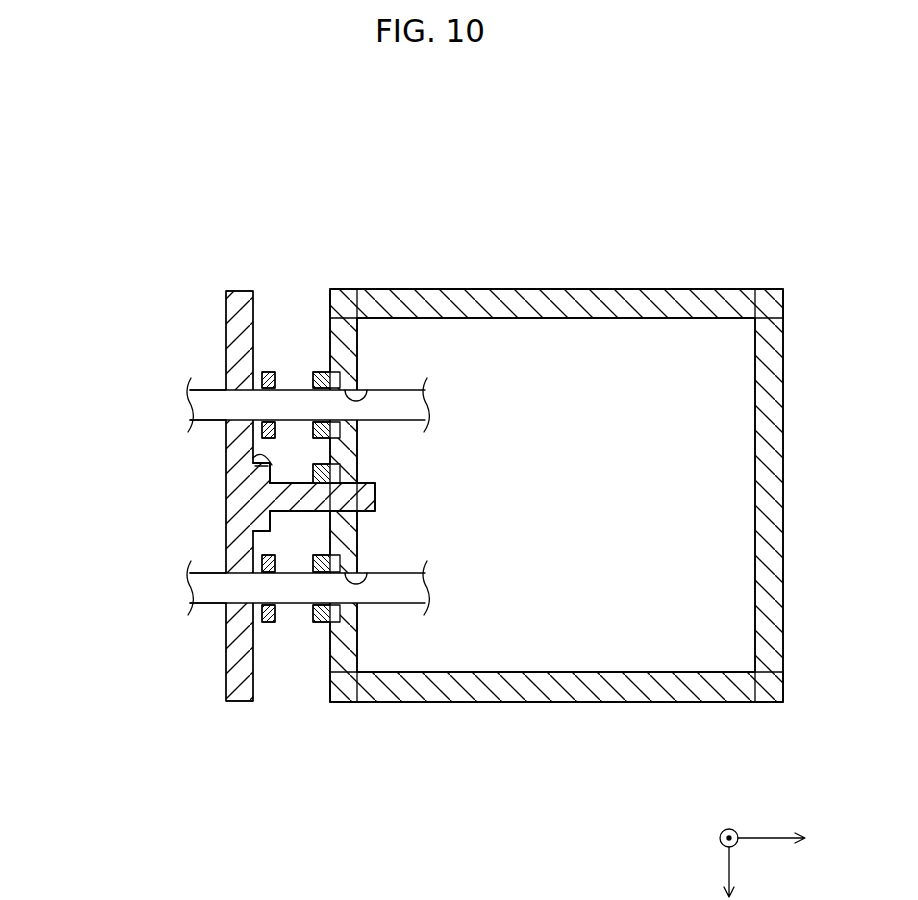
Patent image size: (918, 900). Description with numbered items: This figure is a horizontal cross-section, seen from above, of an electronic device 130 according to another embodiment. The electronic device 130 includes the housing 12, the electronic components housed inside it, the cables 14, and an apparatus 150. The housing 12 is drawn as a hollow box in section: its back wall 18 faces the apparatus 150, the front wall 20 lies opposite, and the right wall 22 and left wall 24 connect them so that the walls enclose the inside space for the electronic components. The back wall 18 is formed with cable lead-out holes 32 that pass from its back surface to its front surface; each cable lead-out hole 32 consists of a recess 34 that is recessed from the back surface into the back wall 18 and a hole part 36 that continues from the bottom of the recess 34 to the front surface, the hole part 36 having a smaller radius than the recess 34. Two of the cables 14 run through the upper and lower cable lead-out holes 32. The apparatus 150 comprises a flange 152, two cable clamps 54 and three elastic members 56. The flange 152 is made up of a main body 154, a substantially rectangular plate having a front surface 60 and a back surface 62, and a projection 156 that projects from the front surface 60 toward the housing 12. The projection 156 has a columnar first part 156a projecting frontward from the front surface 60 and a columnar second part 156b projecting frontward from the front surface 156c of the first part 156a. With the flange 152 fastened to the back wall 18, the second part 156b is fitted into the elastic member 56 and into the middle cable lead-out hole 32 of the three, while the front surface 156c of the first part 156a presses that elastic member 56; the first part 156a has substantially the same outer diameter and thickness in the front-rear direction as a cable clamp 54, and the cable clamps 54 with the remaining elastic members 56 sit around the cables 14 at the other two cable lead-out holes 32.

The electronic device 130 is at (768, 125).
The housing 12 is at (696, 280).
The cables 14 is at (200, 389).
The back wall 18 is at (347, 643).
The front wall 20 is at (765, 490).
The right wall 22 is at (582, 697).
The left wall 24 is at (541, 300).
The cable lead-out hole 32 is at (365, 388).
The recess 34 is at (343, 475).
The hole part 36 is at (352, 496).
The cable clamp 54 is at (268, 371).
The elastic member 56 is at (321, 371).
The front surface 60 is at (262, 470).
The back surface 62 is at (253, 456).
The apparatus 150 is at (358, 203).
The flange 152 is at (212, 493).
The main body 154 is at (240, 702).
The projection 156 is at (112, 502).
The first part 156a is at (266, 478).
The second part 156b is at (266, 520).
The front surface 156c is at (268, 497).